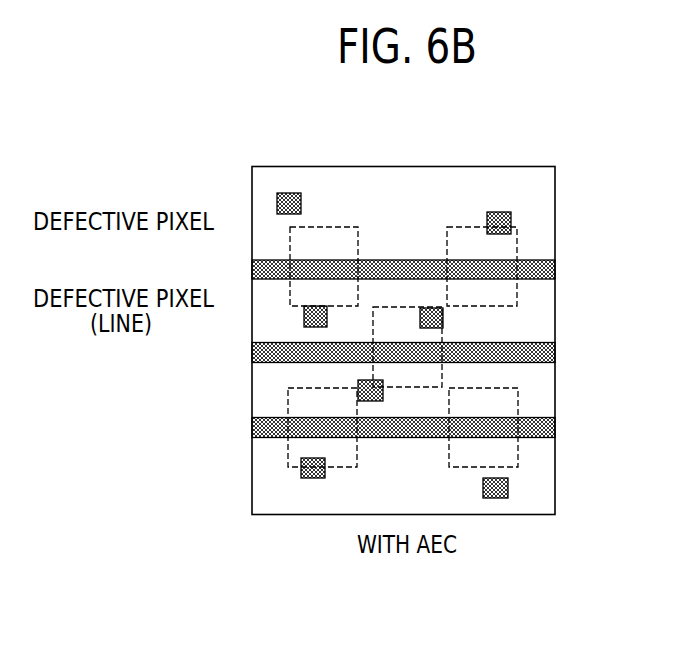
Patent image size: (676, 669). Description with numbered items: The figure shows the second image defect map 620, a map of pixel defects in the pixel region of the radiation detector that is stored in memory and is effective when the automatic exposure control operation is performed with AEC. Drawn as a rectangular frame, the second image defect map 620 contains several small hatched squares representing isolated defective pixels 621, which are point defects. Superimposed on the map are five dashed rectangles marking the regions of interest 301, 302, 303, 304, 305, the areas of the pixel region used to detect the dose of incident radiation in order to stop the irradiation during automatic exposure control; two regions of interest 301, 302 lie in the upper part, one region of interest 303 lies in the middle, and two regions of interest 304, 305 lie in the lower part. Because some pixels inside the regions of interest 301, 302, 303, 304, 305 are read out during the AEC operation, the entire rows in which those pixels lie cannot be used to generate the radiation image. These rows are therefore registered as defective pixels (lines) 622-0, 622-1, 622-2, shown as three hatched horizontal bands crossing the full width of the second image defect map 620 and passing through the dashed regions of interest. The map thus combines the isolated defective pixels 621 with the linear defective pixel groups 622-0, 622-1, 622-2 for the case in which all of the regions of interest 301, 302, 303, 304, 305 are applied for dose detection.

The second image defect map 620 is at (390, 166).
The isolated defective pixel 621 is at (277, 204).
The defective pixel (line) 622-0 is at (252, 271).
The defective pixel (line) 622-1 is at (252, 360).
The defective pixel (line) 622-2 is at (252, 432).
The region of interest 301 is at (350, 226).
The region of interest 302 is at (467, 226).
The region of interest 303 is at (442, 335).
The region of interest 304 is at (345, 470).
The region of interest 305 is at (460, 470).